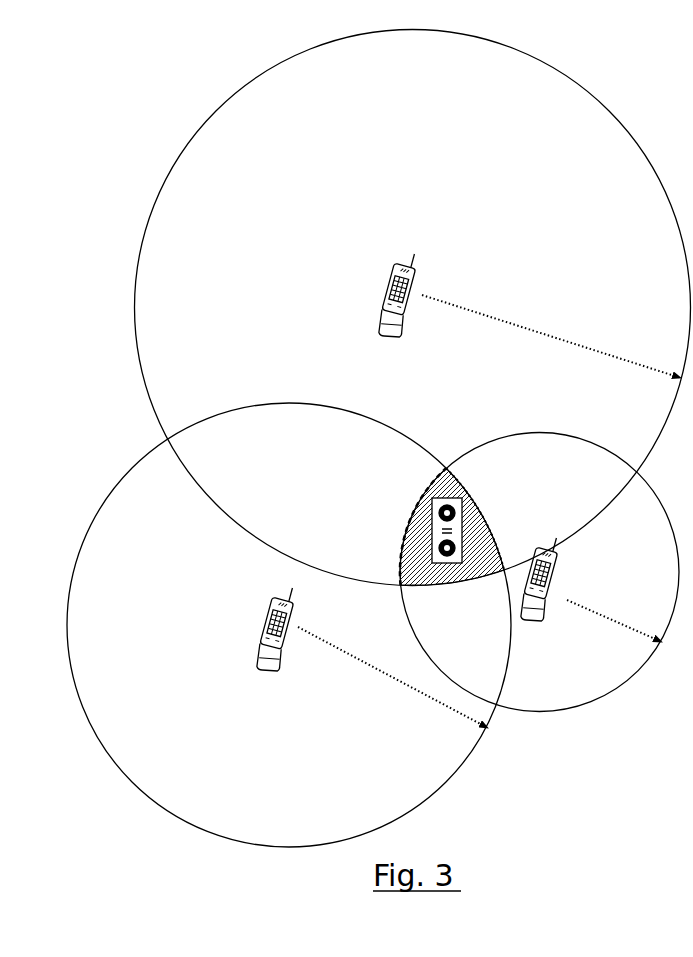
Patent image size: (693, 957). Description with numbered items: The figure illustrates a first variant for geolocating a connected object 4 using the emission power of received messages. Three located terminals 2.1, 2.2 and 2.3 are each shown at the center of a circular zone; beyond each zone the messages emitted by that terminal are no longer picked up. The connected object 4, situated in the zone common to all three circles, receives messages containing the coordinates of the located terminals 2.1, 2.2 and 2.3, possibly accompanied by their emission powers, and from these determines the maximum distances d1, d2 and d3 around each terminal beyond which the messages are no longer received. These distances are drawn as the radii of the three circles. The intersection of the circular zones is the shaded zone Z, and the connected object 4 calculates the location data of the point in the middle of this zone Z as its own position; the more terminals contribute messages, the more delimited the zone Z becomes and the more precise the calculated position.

The located terminal 2.1 is at (420, 295).
The located terminal 2.2 is at (561, 579).
The located terminal 2.3 is at (261, 633).
The connected object 4 is at (430, 499).
The shaded zone Z is at (398, 555).
The maximum distance d1 is at (551, 336).
The maximum distance d2 is at (614, 632).
The maximum distance d3 is at (393, 677).